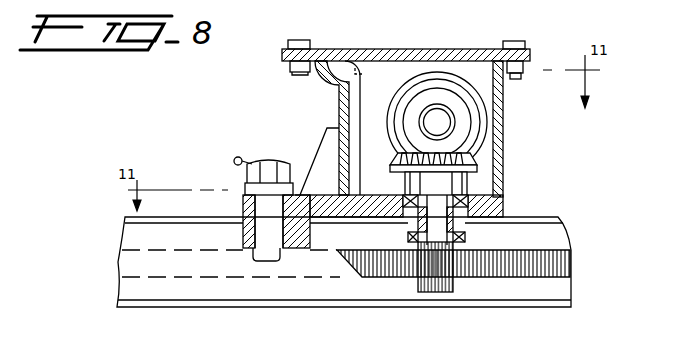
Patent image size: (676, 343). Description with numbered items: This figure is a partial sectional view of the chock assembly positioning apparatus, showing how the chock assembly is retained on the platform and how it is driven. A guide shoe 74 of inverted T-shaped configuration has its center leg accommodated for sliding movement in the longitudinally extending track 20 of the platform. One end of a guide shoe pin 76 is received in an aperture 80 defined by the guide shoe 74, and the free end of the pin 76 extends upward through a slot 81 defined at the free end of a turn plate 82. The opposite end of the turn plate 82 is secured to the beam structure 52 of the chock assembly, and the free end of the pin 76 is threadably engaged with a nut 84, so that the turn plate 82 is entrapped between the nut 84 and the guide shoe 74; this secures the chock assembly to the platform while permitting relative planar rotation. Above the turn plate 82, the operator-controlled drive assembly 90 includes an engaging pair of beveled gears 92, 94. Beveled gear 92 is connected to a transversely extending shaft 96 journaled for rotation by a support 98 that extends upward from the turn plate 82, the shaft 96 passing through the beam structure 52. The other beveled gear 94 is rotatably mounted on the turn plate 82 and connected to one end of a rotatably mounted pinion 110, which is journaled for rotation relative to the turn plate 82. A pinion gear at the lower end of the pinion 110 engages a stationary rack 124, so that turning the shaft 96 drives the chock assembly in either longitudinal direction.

The track 20 is at (173, 215).
The beam structure 52 is at (503, 119).
The guide shoe 74 is at (242, 212).
The guide shoe pin 76 is at (253, 251).
The aperture 80 is at (275, 256).
The slot 81 is at (289, 197).
The turn plate 82 is at (478, 212).
The nut 84 is at (268, 178).
The drive assembly 90 is at (468, 185).
The beveled gear 92 is at (486, 108).
The beveled gear 94 is at (471, 168).
The shaft 96 is at (434, 119).
The support 98 is at (368, 103).
The pinion 110 is at (402, 212).
The stationary rack 124 is at (560, 266).